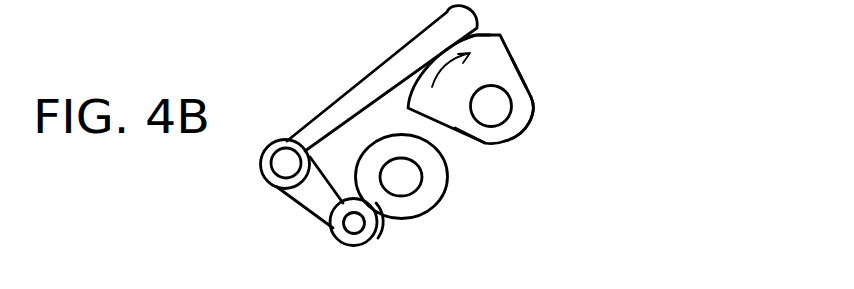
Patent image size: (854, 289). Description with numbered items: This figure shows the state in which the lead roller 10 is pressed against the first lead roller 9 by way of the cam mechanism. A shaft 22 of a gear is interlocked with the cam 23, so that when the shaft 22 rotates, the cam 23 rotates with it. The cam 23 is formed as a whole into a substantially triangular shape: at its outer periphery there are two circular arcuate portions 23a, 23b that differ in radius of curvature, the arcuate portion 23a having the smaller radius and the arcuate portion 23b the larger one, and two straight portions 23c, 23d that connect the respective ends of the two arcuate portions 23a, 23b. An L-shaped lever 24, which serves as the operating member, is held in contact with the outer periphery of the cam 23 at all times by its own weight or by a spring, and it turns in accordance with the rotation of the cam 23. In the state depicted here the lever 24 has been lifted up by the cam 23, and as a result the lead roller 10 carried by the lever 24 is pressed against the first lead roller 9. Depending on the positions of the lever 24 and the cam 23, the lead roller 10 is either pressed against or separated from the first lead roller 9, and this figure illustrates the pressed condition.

The lever 24 is at (397, 69).
The cam 23 is at (503, 61).
The circular arcuate portion 23a is at (535, 118).
The circular arcuate portion 23b is at (476, 33).
The straight portion 23c is at (527, 79).
The straight portion 23d is at (473, 137).
The shaft 22 is at (498, 110).
The first lead roller 9 is at (431, 194).
The lead roller 10 is at (367, 227).